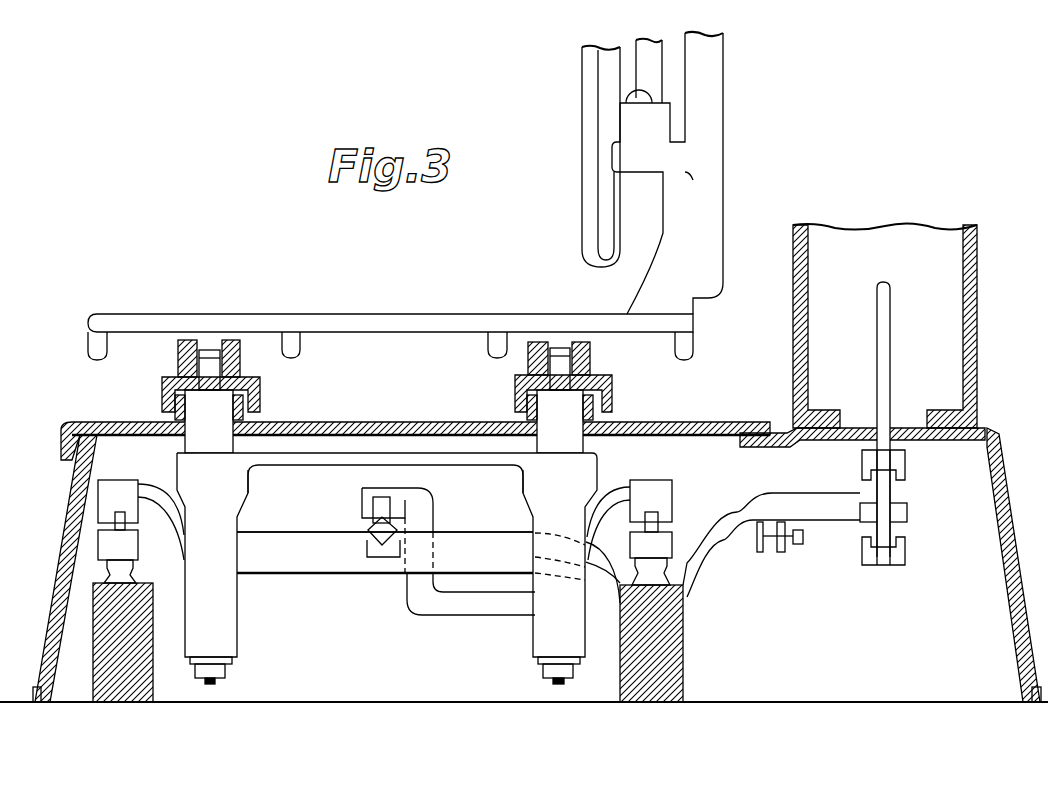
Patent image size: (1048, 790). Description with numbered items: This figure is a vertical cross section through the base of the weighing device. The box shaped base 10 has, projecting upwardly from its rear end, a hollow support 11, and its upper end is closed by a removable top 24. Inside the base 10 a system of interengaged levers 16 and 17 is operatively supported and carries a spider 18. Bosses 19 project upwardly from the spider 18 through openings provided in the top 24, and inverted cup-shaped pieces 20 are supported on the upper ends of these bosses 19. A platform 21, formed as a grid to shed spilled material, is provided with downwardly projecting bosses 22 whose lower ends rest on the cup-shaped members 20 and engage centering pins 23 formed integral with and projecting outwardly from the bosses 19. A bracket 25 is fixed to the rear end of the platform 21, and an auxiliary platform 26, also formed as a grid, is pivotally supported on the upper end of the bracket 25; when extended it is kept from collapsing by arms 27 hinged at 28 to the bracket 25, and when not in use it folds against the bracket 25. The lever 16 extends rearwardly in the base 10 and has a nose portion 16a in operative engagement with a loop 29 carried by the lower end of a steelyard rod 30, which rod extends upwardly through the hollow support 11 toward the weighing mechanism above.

The box shaped base 10 is at (66, 526).
The hollow support 11 is at (888, 237).
The lever 16 is at (318, 562).
The nose portion 16a is at (905, 512).
The lever 17 is at (485, 607).
The spider 18 is at (317, 456).
The bosses 19 is at (387, 537).
The inverted cup-shaped pieces 20 is at (260, 385).
The platform 21 is at (381, 313).
The downwardly projecting bosses 22 is at (177, 350).
The centering pins 23 is at (213, 360).
The removable top 24 is at (78, 424).
The bracket 25 is at (708, 133).
The auxiliary platform 26 is at (582, 208).
The arms 27 is at (642, 48).
The hinge 28 is at (632, 117).
The loop 29 is at (897, 567).
The steelyard rod 30 is at (887, 324).